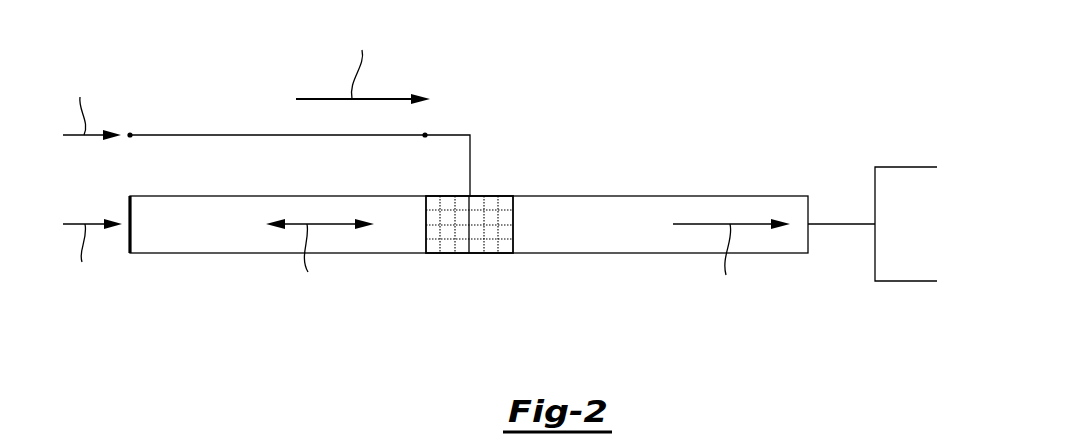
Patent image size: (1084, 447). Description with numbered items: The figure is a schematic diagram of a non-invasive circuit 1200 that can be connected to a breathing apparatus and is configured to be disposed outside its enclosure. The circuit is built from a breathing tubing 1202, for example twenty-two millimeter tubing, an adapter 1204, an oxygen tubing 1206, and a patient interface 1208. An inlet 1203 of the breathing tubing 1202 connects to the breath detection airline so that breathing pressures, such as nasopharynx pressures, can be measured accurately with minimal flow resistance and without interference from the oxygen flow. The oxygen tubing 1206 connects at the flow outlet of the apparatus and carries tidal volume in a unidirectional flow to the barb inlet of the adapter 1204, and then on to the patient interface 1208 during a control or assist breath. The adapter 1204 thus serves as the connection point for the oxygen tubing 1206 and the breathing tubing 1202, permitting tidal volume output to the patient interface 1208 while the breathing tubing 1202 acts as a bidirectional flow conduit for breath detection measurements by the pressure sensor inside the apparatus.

The non-invasive circuit 1200 is at (764, 64).
The breathing tubing 1202 is at (240, 254).
The inlet 1203 is at (130, 198).
The adapter 1204 is at (462, 254).
The oxygen tubing 1206 is at (237, 135).
The patient interface 1208 is at (795, 254).